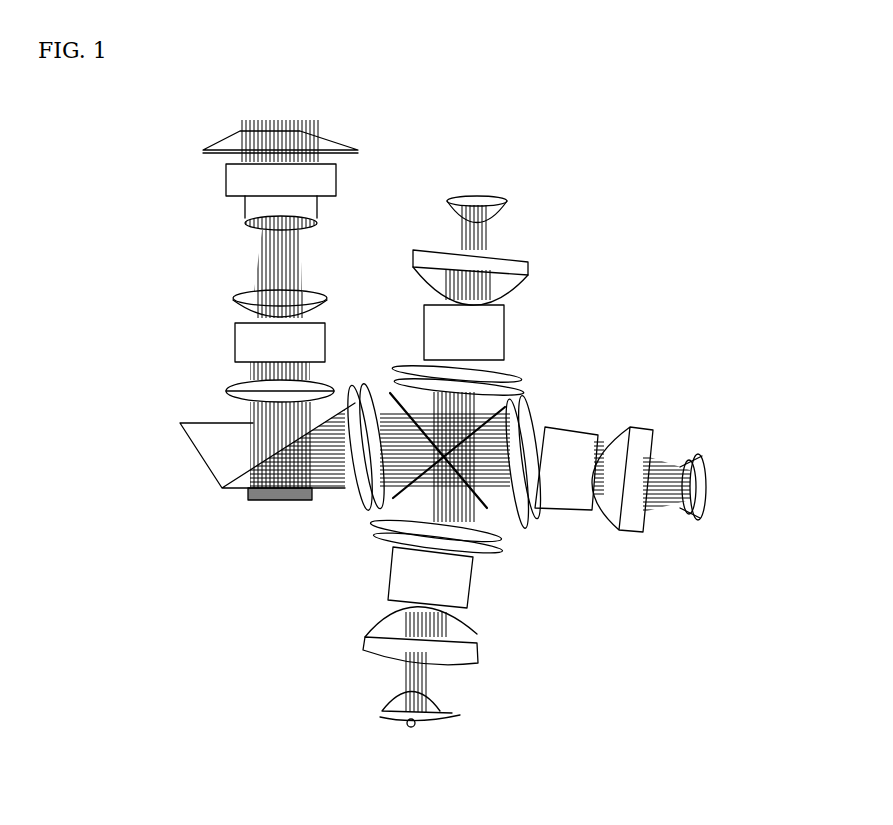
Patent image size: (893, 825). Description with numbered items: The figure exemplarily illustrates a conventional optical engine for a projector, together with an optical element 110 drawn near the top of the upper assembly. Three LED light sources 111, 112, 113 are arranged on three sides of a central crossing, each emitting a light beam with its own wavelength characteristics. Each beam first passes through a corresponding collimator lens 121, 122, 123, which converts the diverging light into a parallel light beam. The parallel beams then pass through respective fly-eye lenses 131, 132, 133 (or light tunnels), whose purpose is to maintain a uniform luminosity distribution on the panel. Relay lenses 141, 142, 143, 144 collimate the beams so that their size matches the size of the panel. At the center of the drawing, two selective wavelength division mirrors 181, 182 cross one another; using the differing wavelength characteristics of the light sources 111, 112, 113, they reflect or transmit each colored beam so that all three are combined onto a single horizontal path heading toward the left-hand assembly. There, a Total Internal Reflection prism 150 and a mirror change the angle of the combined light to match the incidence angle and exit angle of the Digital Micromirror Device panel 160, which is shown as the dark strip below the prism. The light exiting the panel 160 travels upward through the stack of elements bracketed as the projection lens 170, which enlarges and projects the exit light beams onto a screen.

The lens 110 is at (280, 140).
The LED light source 111 is at (478, 198).
The LED light source 112 is at (707, 488).
The LED light source 113 is at (414, 727).
The collimator lens 121 is at (508, 207).
The collimator lens 122 is at (693, 447).
The collimator lens 123 is at (443, 715).
The fly-eye lens 131 is at (504, 330).
The fly-eye lens 132 is at (582, 428).
The fly-eye lens 133 is at (473, 590).
The relay lens 141 is at (502, 368).
The relay lens 142 is at (533, 400).
The relay lens 143 is at (503, 540).
The relay lens 144 is at (357, 510).
The Total Internal Reflection prism 150 is at (240, 493).
The Digital Micromirror Device panel 160 is at (287, 498).
The projection lens 170 is at (187, 105).
The selective wavelength division mirror 181 is at (505, 405).
The selective wavelength division mirror 182 is at (390, 393).